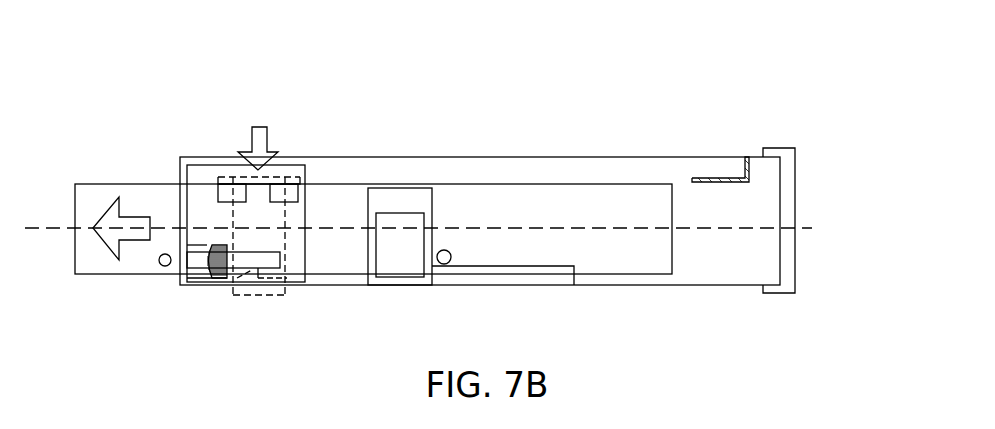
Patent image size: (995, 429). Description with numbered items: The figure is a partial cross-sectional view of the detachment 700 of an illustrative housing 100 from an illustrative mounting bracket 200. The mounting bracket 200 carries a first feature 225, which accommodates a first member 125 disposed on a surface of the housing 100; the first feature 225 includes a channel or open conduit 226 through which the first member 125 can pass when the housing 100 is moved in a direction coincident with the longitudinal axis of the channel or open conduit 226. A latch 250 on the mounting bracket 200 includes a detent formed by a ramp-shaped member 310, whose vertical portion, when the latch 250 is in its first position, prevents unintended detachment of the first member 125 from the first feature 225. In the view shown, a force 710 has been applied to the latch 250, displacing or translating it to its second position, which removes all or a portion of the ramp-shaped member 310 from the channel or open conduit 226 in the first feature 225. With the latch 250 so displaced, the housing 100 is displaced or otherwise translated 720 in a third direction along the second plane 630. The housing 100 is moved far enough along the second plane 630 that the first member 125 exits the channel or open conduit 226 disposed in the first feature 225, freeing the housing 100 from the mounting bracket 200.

The housing 100 is at (629, 182).
The first member 125 is at (165, 266).
The mounting bracket 200 is at (782, 143).
The first feature 225 is at (202, 165).
The channel or open conduit 226 is at (197, 262).
The latch 250 is at (297, 177).
The ramp-shaped member 310 is at (250, 272).
The second plane 630 is at (45, 227).
The detachment of the housing from the mounting bracket 700 is at (713, 72).
The force 710 is at (257, 127).
The translation of the housing 720 is at (137, 217).